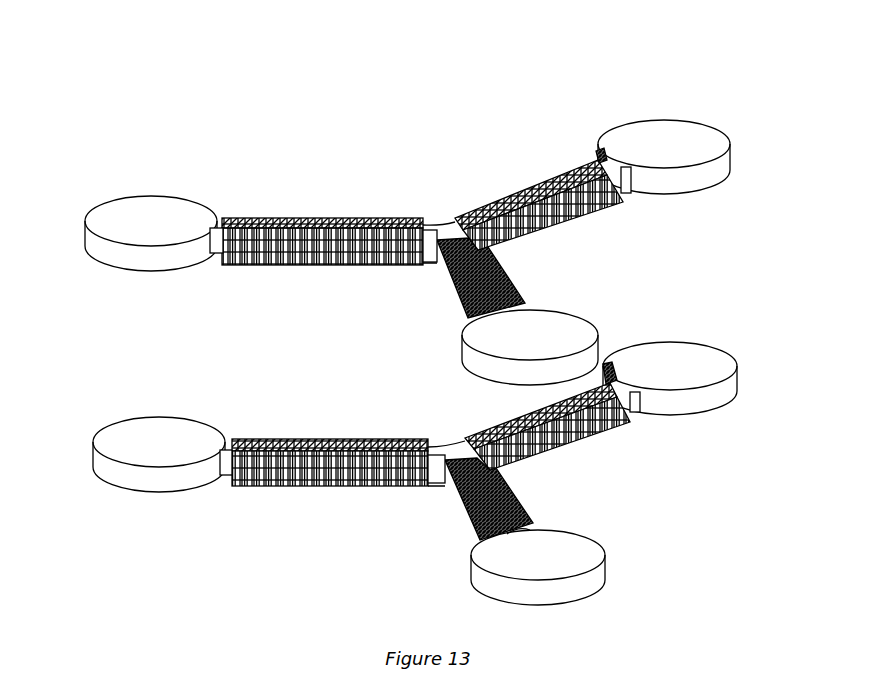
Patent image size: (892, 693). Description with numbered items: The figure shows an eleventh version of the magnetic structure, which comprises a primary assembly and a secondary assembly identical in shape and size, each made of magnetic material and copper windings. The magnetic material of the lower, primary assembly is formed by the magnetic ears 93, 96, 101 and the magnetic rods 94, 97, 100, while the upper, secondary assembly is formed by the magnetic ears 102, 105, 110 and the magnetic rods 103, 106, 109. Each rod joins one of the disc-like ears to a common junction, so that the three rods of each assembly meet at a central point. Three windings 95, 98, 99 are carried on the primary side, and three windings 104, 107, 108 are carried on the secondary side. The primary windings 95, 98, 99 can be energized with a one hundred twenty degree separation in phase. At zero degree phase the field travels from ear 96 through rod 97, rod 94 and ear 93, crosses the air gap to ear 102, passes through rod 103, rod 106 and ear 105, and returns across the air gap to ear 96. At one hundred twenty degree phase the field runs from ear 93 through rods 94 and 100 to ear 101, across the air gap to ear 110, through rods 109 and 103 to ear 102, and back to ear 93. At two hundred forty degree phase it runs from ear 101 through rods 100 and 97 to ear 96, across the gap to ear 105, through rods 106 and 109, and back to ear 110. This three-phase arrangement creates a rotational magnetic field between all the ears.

The magnetic ear 93 is at (561, 549).
The magnetic rod 94 is at (534, 522).
The primary winding 95 is at (465, 515).
The magnetic ear 96 is at (137, 440).
The magnetic rod 97 is at (228, 440).
The primary winding 98 is at (350, 438).
The primary winding 99 is at (504, 421).
The magnetic rod 100 is at (611, 365).
The magnetic ear 101 is at (692, 366).
The magnetic ear 102 is at (556, 331).
The magnetic rod 103 is at (467, 311).
The secondary winding 104 is at (491, 255).
The magnetic ear 105 is at (137, 218).
The magnetic rod 106 is at (216, 222).
The secondary winding 107 is at (328, 219).
The secondary winding 108 is at (506, 192).
The magnetic rod 109 is at (598, 157).
The magnetic ear 110 is at (667, 140).